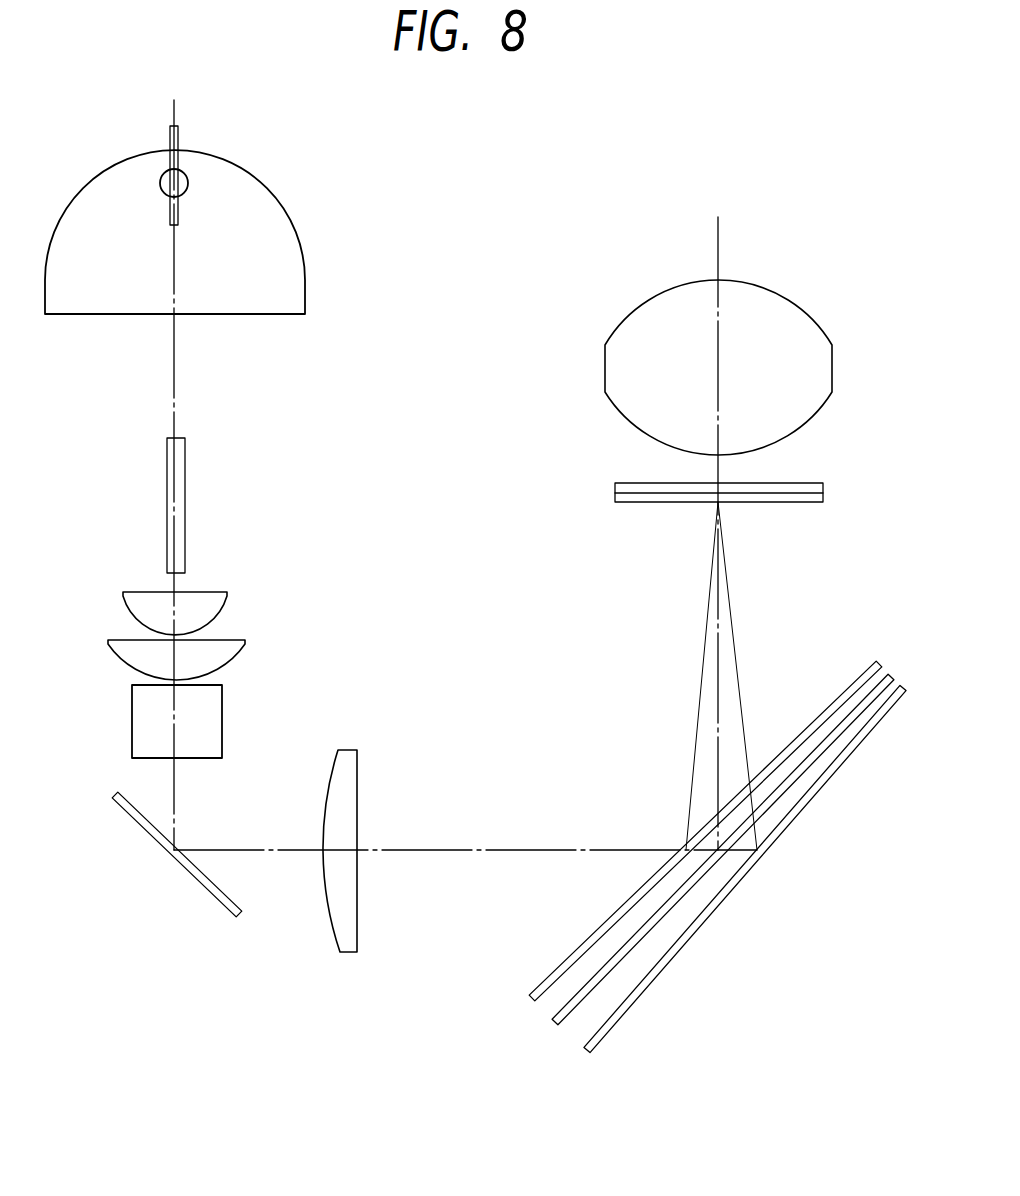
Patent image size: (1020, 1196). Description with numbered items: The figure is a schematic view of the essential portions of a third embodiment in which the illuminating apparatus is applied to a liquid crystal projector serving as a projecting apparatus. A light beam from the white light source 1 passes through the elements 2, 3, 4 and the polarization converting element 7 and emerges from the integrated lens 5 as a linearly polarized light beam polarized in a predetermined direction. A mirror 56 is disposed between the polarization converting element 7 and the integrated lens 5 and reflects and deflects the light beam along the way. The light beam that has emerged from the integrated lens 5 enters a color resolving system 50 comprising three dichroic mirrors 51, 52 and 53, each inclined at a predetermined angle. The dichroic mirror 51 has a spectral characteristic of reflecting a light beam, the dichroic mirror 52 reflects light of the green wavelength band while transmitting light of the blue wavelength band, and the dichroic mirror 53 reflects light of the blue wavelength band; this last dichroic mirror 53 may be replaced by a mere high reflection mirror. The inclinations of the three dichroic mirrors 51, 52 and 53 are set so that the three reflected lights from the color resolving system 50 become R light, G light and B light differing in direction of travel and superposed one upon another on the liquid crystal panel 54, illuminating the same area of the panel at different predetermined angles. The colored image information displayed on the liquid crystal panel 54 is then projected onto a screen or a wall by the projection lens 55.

The white light source 1 is at (189, 191).
The element 2 is at (297, 255).
The element 3 is at (186, 511).
The element 4 is at (247, 585).
The integrated lens 5 is at (350, 754).
The polarization converting element 7 is at (222, 725).
The color resolving system 50 is at (903, 664).
The dichroic mirror 51 is at (530, 1000).
The dichroic mirror 52 is at (553, 1025).
The dichroic mirror 53 is at (585, 1053).
The liquid crystal panel 54 is at (823, 490).
The projection lens 55 is at (830, 383).
The mirror 56 is at (210, 895).